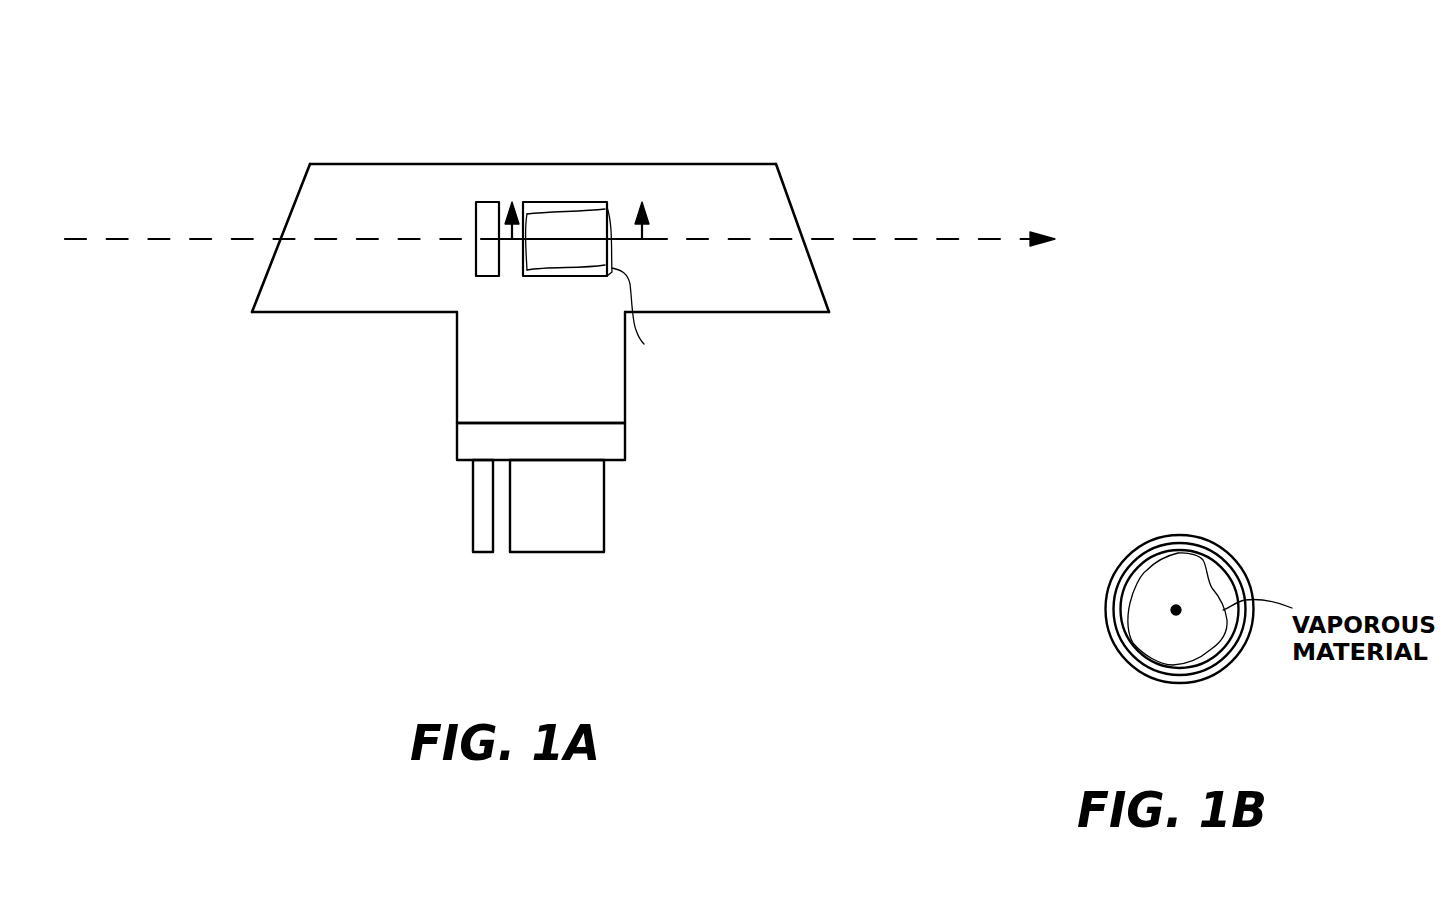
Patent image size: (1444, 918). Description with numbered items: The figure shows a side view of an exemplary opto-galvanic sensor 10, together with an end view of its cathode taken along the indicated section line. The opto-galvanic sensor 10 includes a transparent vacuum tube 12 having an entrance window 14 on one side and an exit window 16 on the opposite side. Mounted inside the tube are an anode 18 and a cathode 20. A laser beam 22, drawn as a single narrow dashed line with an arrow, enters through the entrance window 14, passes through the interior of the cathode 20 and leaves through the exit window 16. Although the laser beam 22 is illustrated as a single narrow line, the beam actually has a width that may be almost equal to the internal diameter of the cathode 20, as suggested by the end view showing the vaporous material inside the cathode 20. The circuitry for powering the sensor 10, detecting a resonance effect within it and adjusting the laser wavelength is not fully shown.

In FIG. 1A, the opto-galvanic sensor 10 is at (962, 102).
In FIG. 1A, the transparent vacuum tube 12 is at (696, 180).
In FIG. 1A, the entrance window 14 is at (287, 213).
In FIG. 1A, the exit window 16 is at (792, 213).
In FIG. 1A, the anode 18 is at (491, 227).
In FIG. 1A, the cathode 20 is at (587, 202).
In FIG. 1B, the cathode 20 is at (1203, 537).
In FIG. 1A, the laser beam 22 is at (198, 240).
In FIG. 1B, the laser beam 22 is at (1176, 610).